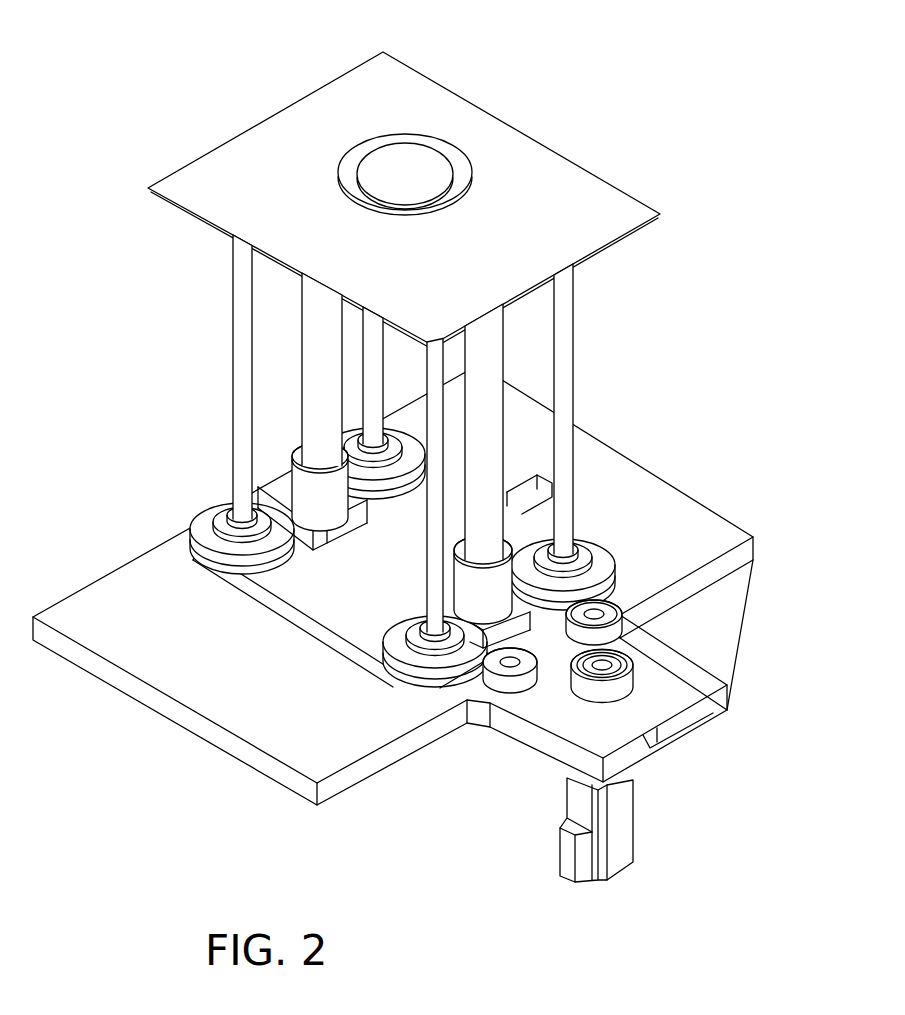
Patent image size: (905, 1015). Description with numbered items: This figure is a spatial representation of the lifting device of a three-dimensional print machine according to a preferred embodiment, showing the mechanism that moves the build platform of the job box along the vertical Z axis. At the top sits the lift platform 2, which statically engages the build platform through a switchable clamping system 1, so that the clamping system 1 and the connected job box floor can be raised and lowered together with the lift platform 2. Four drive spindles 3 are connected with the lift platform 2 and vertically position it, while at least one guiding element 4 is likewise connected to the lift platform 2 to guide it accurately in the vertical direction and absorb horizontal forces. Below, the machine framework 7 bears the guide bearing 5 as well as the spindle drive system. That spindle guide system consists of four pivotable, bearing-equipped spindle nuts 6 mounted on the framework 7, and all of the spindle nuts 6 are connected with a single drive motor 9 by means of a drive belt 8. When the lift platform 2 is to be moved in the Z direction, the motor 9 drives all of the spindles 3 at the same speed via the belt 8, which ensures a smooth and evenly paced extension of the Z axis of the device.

The switchable clamping system 1 is at (453, 158).
The lift platform 2 is at (522, 243).
The drive spindle 3 is at (560, 379).
The guiding element 4 is at (485, 461).
The guide bearing 5 is at (488, 577).
The spindle nut 6 is at (612, 564).
The machine framework 7 is at (637, 583).
The drive belt 8 is at (615, 692).
The drive motor 9 is at (620, 823).